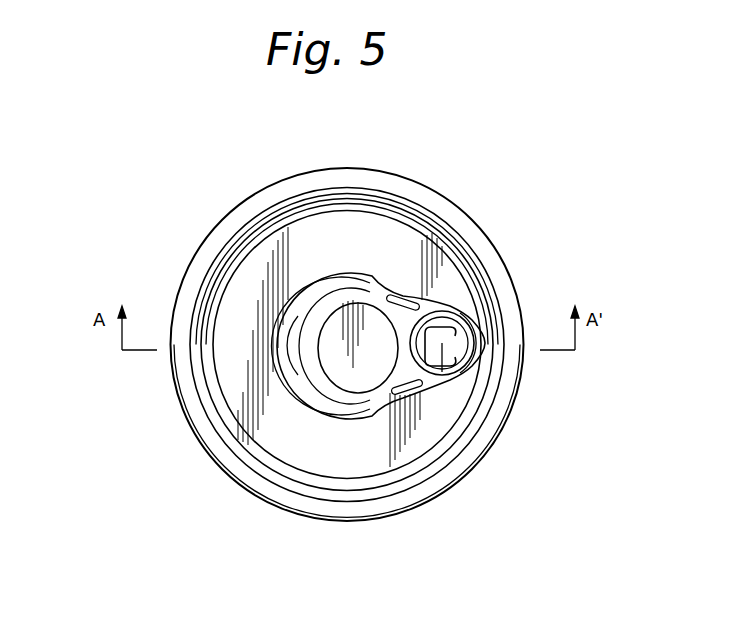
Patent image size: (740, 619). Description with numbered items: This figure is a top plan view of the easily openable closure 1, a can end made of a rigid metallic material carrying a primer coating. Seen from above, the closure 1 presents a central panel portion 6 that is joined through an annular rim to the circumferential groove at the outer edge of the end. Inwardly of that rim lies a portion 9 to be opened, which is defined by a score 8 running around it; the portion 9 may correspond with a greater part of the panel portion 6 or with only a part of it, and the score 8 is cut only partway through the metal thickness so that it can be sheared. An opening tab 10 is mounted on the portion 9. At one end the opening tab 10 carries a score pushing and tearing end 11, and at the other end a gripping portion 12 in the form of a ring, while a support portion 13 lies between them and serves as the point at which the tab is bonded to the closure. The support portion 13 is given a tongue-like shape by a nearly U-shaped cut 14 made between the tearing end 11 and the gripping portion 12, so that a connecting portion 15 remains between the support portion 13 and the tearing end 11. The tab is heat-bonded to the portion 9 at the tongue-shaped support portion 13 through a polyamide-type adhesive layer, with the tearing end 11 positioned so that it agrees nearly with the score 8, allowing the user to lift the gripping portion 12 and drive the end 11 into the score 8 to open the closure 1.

The easily openable closure 1 is at (397, 176).
The panel portion 6 is at (381, 247).
The score 8 is at (252, 446).
The portion to be opened 9 is at (387, 432).
The opening tab 10 is at (405, 317).
The score tearing end 11 is at (462, 345).
The gripping portion 12 is at (337, 388).
The support portion 13 is at (442, 372).
The U-shaped cut 14 is at (462, 322).
The connecting portion 15 is at (479, 352).